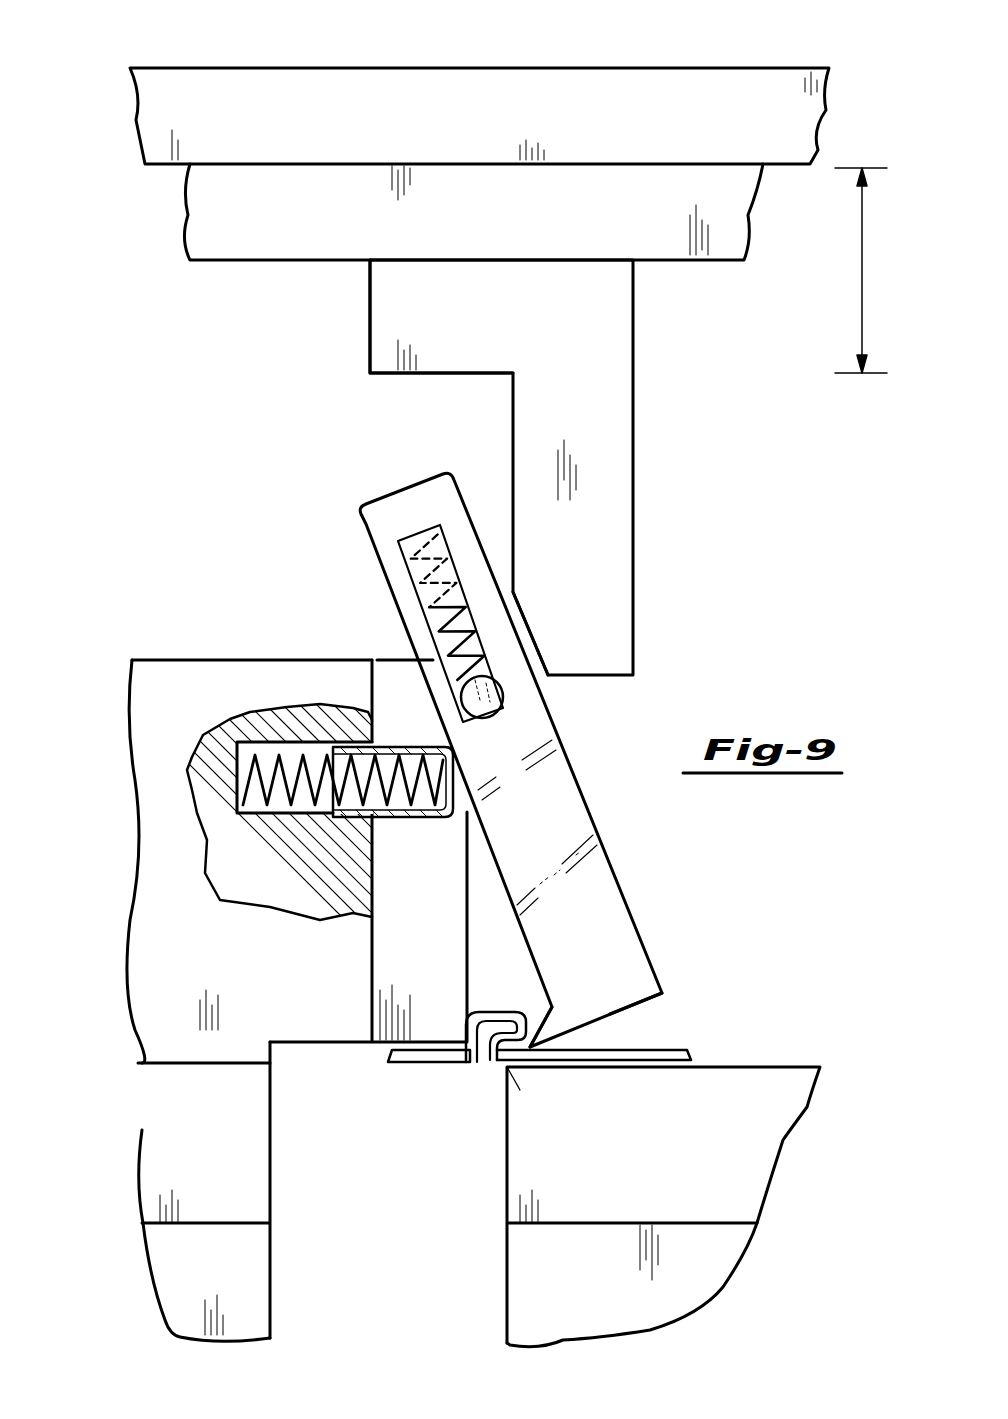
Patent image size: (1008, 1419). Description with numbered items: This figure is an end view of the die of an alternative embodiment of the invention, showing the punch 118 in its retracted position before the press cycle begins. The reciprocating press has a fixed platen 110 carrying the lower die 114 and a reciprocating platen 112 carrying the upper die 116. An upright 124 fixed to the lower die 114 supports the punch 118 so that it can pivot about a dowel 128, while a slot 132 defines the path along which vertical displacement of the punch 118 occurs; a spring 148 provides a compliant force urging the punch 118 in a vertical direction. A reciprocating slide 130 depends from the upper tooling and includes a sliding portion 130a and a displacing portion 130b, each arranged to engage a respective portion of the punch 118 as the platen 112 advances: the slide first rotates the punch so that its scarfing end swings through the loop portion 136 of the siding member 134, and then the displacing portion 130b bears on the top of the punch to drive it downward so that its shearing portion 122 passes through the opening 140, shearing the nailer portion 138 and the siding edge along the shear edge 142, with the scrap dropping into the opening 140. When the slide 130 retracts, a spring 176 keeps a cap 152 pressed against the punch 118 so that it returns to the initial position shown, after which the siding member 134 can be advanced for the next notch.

The reciprocating platen 112 is at (663, 133).
The upper die 116 is at (717, 224).
The reciprocating slide 130 is at (608, 542).
The sliding portion 130a is at (530, 638).
The displacing portion 130b is at (452, 371).
The upright 124 is at (202, 703).
The spring 176 is at (267, 820).
The cap 152 is at (337, 822).
The punch 118 is at (623, 883).
The spring 148 is at (430, 637).
The slot 132 is at (503, 690).
The dowel 128 is at (475, 698).
The loop portion 136 is at (488, 1020).
The nailer portion 138 is at (417, 1063).
The siding member 134 is at (652, 1050).
The shearing portion 122 is at (662, 993).
The lower die 114 is at (195, 1128).
The fixed platen 110 is at (193, 1268).
The shear edge 142 is at (510, 1070).
The opening 140 is at (387, 1222).